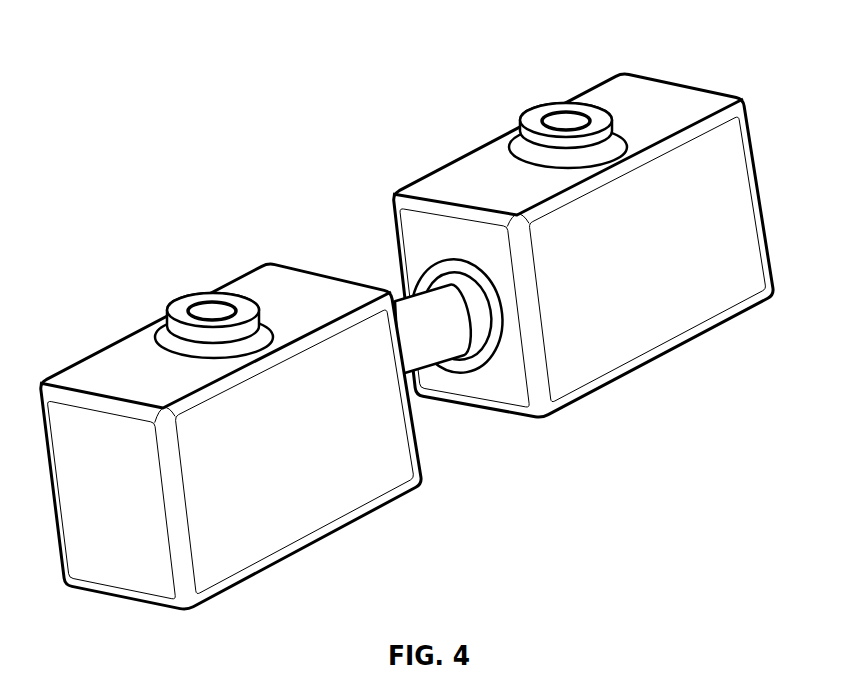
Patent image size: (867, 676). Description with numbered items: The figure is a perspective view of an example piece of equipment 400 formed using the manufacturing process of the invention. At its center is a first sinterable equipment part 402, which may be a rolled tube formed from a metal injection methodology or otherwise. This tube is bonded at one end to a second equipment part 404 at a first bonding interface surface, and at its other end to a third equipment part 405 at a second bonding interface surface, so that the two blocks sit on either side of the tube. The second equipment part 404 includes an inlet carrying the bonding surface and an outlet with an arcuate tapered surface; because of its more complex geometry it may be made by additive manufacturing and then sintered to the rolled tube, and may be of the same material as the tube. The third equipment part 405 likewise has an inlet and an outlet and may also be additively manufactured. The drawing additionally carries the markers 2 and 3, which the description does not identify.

The connector assembly 400 is at (617, 35).
The first housing 404 is at (107, 366).
The second housing 405 is at (651, 90).
The coupling connector 402 is at (400, 305).
The view direction of FIG. 2 is at (155, 314).
The view direction of FIG. 3 is at (431, 387).